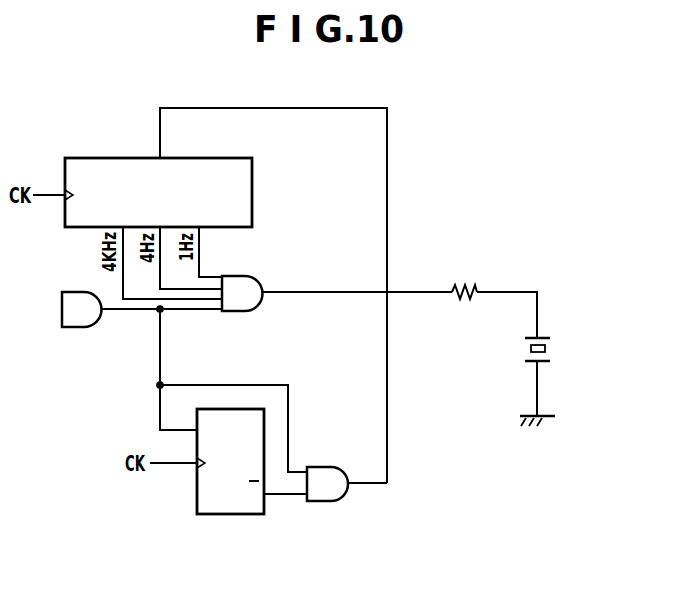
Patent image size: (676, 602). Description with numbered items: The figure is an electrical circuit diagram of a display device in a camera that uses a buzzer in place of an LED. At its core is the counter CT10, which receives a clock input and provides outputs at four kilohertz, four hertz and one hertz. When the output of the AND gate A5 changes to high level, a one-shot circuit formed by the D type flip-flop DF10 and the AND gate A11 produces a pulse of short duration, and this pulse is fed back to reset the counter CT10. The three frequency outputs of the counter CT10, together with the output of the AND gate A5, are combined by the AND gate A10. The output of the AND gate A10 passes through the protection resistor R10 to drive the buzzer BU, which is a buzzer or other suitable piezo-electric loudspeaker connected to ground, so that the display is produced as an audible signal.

The counter CT10 is at (253, 186).
The AND gate A5 is at (82, 309).
The AND gate A10 is at (242, 293).
The AND gate A11 is at (327, 484).
The D type flip-flop DF10 is at (197, 507).
The protection resistor R10 is at (465, 286).
The buzzer BU is at (527, 352).